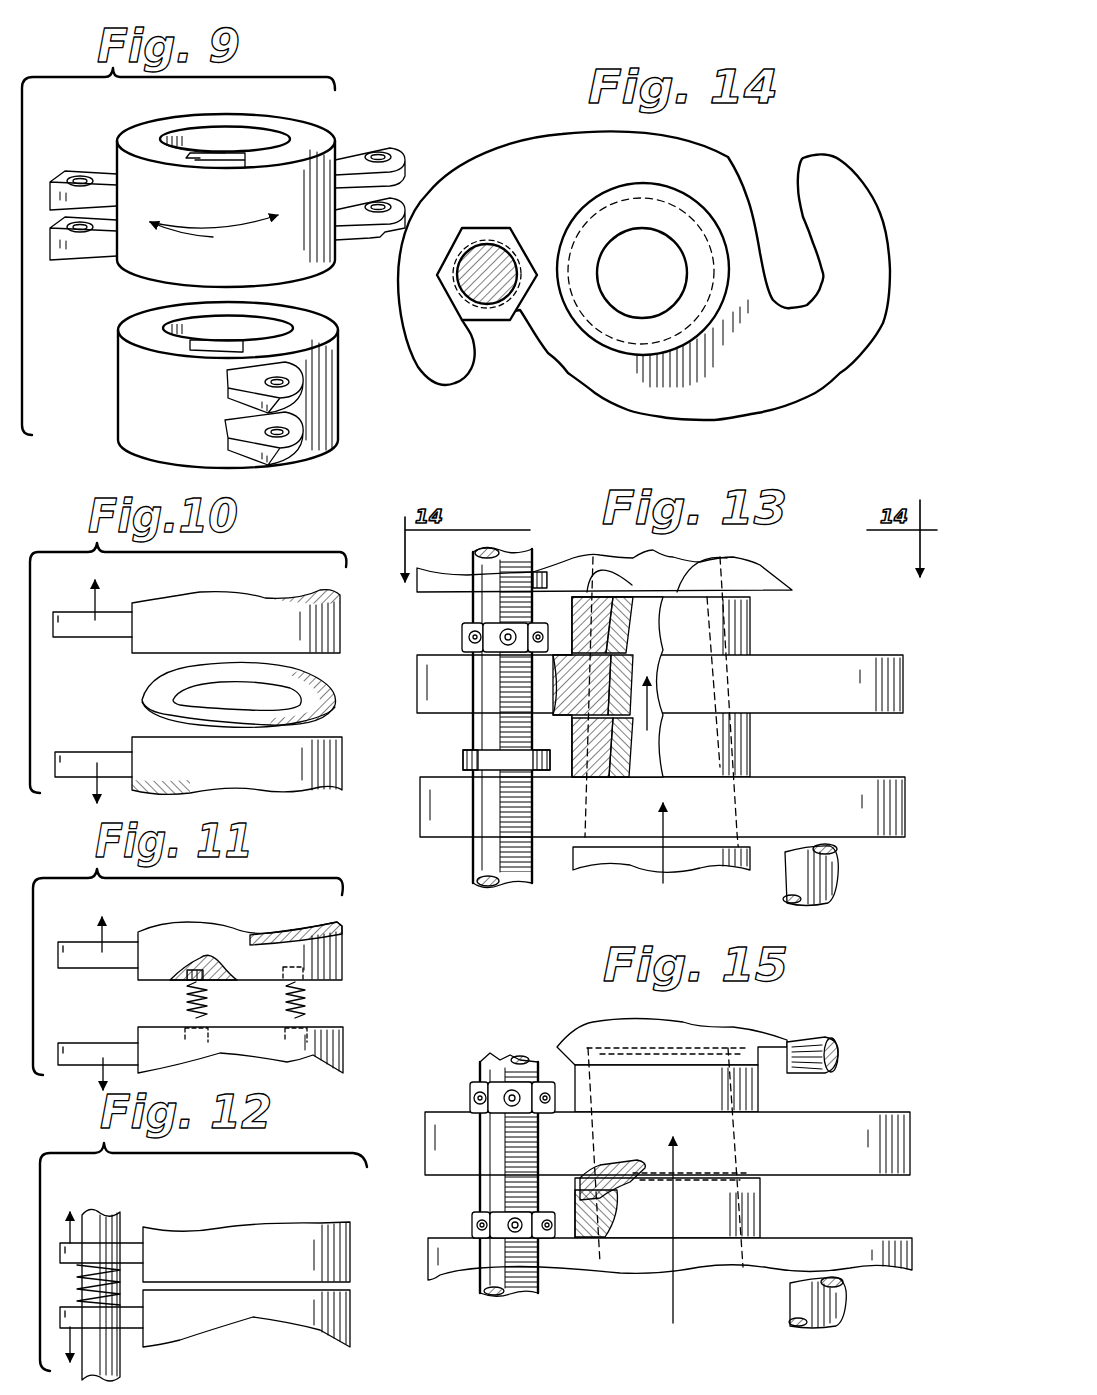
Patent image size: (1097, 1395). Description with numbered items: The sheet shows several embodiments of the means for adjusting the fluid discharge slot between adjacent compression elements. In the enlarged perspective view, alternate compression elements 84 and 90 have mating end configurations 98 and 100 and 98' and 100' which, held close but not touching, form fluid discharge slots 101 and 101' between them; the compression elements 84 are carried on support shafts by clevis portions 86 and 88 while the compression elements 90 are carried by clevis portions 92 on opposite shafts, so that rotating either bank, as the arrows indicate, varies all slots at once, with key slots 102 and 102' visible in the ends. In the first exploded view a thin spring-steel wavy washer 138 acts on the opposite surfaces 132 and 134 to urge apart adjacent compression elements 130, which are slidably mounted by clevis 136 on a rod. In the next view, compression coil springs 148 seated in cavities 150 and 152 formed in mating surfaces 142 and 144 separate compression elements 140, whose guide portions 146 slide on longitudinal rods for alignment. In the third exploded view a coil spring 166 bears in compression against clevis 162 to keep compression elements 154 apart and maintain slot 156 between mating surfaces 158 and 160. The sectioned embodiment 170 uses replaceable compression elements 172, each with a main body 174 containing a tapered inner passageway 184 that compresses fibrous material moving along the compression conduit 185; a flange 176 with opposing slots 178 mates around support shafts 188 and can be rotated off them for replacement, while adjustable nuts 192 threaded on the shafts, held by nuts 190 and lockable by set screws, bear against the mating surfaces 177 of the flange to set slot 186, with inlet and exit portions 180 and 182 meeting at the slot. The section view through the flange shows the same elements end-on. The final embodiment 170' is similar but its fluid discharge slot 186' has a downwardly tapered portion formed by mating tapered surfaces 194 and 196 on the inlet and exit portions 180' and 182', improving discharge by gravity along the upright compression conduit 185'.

In FIG. 9, the compression element 84 is at (297, 147).
In FIG. 9, the clevis portion 86 is at (386, 146).
In FIG. 9, the clevis portion 88 is at (80, 173).
In FIG. 9, the compression element 90 is at (338, 398).
In FIG. 9, the clevis portion 92 is at (283, 470).
In FIG. 9, the mating end configuration 98 is at (238, 120).
In FIG. 9, the mating end configuration 98' is at (274, 329).
In FIG. 9, the mating end configuration 100 is at (225, 390).
In FIG. 9, the mating end configuration 100' is at (331, 280).
In FIG. 9, the fluid discharge slot 101 is at (94, 306).
In FIG. 9, the fluid discharge slot 101' is at (80, 115).
In FIG. 9, the key slot 102 is at (224, 127).
In FIG. 9, the key slot 102' is at (251, 317).
In FIG. 10, the compression element 130 is at (343, 617).
In FIG. 10, the opposite surface 132 is at (330, 655).
In FIG. 10, the opposite surface 134 is at (320, 730).
In FIG. 10, the clevis 136 is at (93, 638).
In FIG. 10, the wavy washer 138 is at (140, 698).
In FIG. 11, the compression element 140 is at (345, 947).
In FIG. 11, the mating surface 142 is at (330, 982).
In FIG. 11, the mating surface 144 is at (335, 1015).
In FIG. 11, the guide portion 146 is at (85, 1003).
In FIG. 11, the compression coil spring 148 is at (283, 997).
In FIG. 11, the cavity 150 is at (340, 925).
In FIG. 11, the cavity 152 is at (297, 1045).
In FIG. 12, the compression element 154 is at (350, 1237).
In FIG. 12, the slot 156 is at (350, 1305).
In FIG. 12, the mating surface 158 is at (340, 1283).
In FIG. 12, the mating surface 160 is at (267, 1287).
In FIG. 12, the clevis 162 is at (127, 1237).
In FIG. 12, the coil spring 166 is at (120, 1277).
In FIG. 14, the embodiment 170 is at (644, 267).
In FIG. 13, the embodiment 170 is at (846, 611).
In FIG. 15, the clamp assembly 170' is at (668, 1158).
In FIG. 14, the replaceable compression element 172 is at (656, 141).
In FIG. 13, the replaceable compression element 172 is at (822, 717).
In FIG. 14, the main body 174 is at (613, 188).
In FIG. 13, the main body 174 is at (750, 617).
In FIG. 14, the flange 176 is at (867, 342).
In FIG. 13, the flange 176 is at (905, 667).
In FIG. 14, the mating surface 177 is at (835, 198).
In FIG. 13, the mating surface 177 is at (822, 652).
In FIG. 14, the opposing slot 178 is at (800, 280).
In FIG. 14, the cone 180 is at (678, 265).
In FIG. 13, the cone 180 is at (662, 712).
In FIG. 15, the inlet portion 180' is at (697, 1185).
In FIG. 14, the plate 182 is at (681, 236).
In FIG. 13, the plate 182 is at (604, 568).
In FIG. 15, the exit portion 182' is at (672, 1032).
In FIG. 14, the tapered inner passageway 184 is at (698, 298).
In FIG. 13, the tapered inner passageway 184 is at (627, 578).
In FIG. 14, the compression conduit 185 is at (577, 328).
In FIG. 13, the compression conduit 185 is at (661, 853).
In FIG. 15, the compression conduit 185' is at (628, 1289).
In FIG. 13, the slot 186 is at (679, 687).
In FIG. 15, the fluid discharge slot 186' is at (792, 1199).
In FIG. 14, the support shaft 188 is at (495, 250).
In FIG. 13, the support shaft 188 is at (510, 882).
In FIG. 15, the support shaft 188 is at (500, 1297).
In FIG. 14, the nut 190 is at (498, 263).
In FIG. 13, the nut 190 is at (463, 755).
In FIG. 15, the nut 190 is at (472, 1097).
In FIG. 13, the adjustable nut 192 is at (463, 763).
In FIG. 15, the adjustable nut 192 is at (510, 1097).
In FIG. 15, the mating tapered surface 194 is at (613, 1212).
In FIG. 15, the mating tapered surface 196 is at (625, 1158).